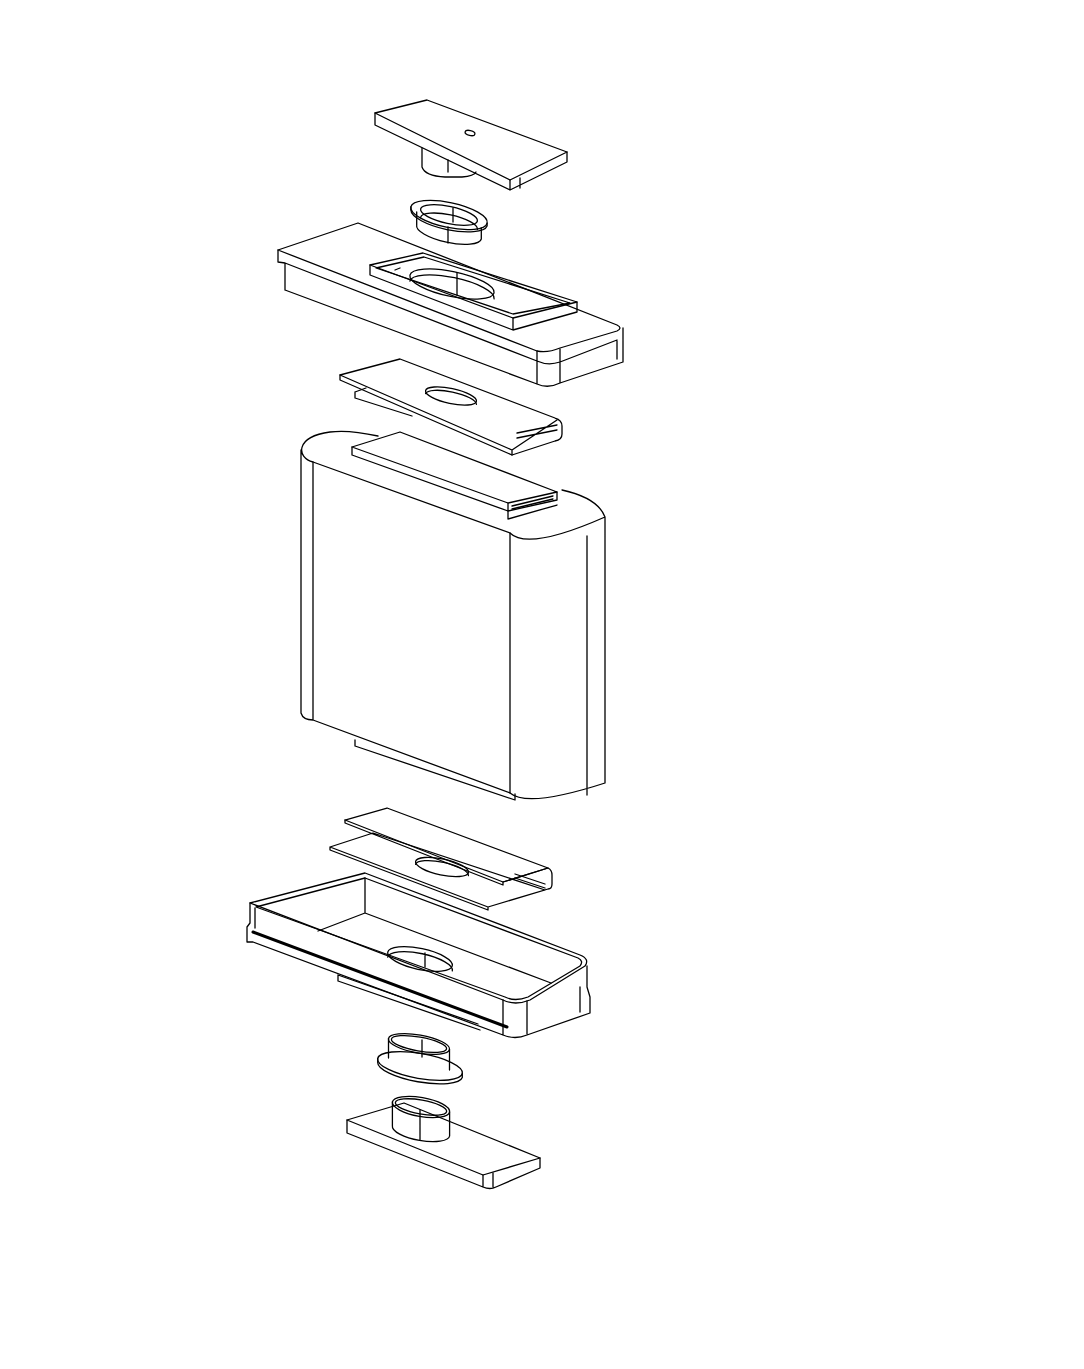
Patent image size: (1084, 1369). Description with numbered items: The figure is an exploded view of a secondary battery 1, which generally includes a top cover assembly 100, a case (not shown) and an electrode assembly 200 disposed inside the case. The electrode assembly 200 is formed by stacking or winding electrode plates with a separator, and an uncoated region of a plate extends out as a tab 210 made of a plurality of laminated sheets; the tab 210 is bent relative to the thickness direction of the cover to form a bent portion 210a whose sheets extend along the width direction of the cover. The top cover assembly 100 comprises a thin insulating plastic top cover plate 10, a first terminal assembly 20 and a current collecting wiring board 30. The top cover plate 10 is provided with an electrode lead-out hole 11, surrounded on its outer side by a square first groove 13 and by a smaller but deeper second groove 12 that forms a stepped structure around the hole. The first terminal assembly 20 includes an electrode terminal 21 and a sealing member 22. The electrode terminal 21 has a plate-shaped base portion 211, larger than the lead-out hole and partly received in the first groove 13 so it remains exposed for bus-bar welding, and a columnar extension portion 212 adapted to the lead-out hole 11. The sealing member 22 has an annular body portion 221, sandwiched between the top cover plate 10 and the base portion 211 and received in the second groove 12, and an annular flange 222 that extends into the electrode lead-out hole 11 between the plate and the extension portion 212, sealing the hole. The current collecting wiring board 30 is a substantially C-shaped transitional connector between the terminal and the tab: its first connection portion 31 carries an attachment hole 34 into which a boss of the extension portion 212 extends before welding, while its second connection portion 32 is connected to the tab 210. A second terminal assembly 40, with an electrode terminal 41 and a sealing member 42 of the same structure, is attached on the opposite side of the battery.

The secondary battery 1 is at (578, 73).
The top cover assembly 100 is at (677, 273).
The top cover plate 10 is at (593, 328).
The electrode lead-out hole 11 is at (442, 277).
The second groove 12 is at (413, 273).
The first groove 13 is at (543, 298).
The first terminal assembly 20 is at (367, 130).
The electrode terminal 21 is at (640, 127).
The base portion 211 is at (522, 145).
The extension portion 212 is at (453, 167).
The sealing member 22 is at (600, 213).
The body portion 221 is at (493, 218).
The annular flange 222 is at (473, 238).
The current collecting wiring board 30 is at (573, 413).
The first connection portion 31 is at (395, 375).
The second connection portion 32 is at (377, 402).
The attachment hole 34 is at (447, 390).
The electrode assembly 200 is at (572, 637).
The tab 210 is at (543, 498).
The bent portion 210a is at (525, 488).
The second terminal assembly 40 is at (312, 1065).
The electrode terminal 41 is at (460, 1142).
The sealing member 42 is at (447, 1063).